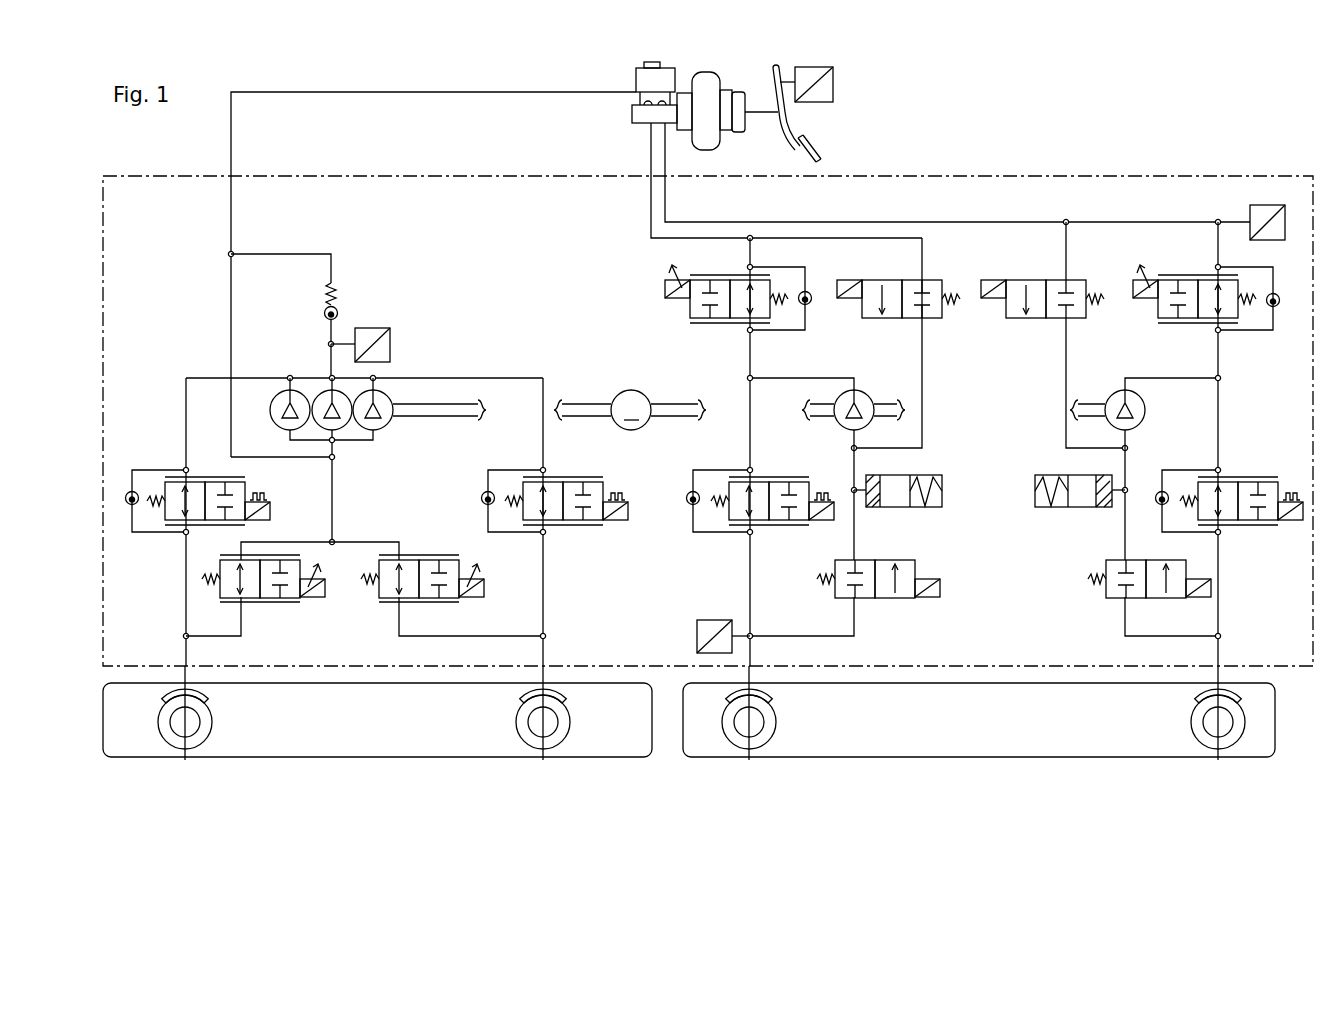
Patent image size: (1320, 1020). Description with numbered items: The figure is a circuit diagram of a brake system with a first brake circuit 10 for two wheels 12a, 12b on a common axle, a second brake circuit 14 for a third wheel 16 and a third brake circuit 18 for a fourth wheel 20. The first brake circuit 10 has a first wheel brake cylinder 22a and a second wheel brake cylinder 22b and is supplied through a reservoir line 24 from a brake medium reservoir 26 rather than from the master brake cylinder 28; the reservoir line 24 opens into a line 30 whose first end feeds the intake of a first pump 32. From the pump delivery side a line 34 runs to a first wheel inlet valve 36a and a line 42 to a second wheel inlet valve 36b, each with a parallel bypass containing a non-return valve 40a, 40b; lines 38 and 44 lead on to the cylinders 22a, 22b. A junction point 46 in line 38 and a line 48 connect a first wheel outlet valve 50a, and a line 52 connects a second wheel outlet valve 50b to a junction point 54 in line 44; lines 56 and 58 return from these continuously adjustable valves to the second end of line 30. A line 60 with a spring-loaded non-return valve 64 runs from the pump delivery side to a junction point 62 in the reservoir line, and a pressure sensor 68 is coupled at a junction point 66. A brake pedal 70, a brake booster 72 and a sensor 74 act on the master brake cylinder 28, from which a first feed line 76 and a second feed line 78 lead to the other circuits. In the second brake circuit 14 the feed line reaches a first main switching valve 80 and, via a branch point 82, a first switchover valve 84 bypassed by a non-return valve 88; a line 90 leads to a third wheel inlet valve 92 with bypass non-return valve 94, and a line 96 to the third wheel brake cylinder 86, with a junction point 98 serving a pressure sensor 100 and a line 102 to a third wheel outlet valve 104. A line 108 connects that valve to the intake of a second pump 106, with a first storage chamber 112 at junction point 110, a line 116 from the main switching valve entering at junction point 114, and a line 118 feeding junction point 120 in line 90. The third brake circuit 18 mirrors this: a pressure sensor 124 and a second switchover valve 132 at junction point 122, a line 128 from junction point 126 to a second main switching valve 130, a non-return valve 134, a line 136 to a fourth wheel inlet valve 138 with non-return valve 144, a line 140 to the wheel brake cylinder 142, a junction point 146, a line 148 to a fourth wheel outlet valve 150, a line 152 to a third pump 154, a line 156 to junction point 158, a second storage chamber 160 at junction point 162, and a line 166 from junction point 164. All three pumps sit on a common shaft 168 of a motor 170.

The first brake circuit 10 is at (243, 230).
The first wheel 12a is at (208, 720).
The second wheel 12b is at (566, 720).
The second brake circuit 14 is at (648, 254).
The third wheel 16 is at (770, 720).
The third brake circuit 18 is at (1072, 210).
The fourth wheel 20 is at (1238, 720).
The first wheel brake cylinder 22a is at (185, 760).
The second wheel brake cylinder 22b is at (543, 760).
The reservoir line 24 is at (320, 92).
The brake medium reservoir 26 is at (640, 80).
The master brake cylinder 28 is at (632, 114).
The line 30 is at (332, 492).
The first pump 32 is at (348, 444).
The line 34 is at (186, 393).
The first wheel inlet valve 36a is at (247, 492).
The second wheel inlet valve 36b is at (603, 492).
The line 38 is at (186, 590).
The non-return valve 40a is at (132, 491).
The second non-return valve 40b is at (481, 498).
The line 42 is at (467, 378).
The line 44 is at (543, 585).
The junction point 46 is at (186, 636).
The line 48 is at (232, 638).
The first wheel outlet valve 50a is at (302, 592).
The second wheel outlet valve 50b is at (461, 592).
The line 52 is at (440, 638).
The junction point 54 is at (543, 636).
The line 56 is at (270, 542).
The line 58 is at (358, 542).
The line 60 is at (331, 265).
The junction point 62 is at (231, 254).
The non-return valve 64 is at (338, 313).
The junction point 66 is at (331, 344).
The pressure sensor 68 is at (390, 340).
The brake pedal 70 is at (790, 124).
The brake booster 72 is at (712, 138).
The sensor 74 is at (833, 85).
The first feed line 76 is at (651, 200).
The second feed line 78 is at (665, 200).
The first main switching valve 80 is at (930, 325).
The branch point 82 is at (750, 240).
The first switchover valve 84 is at (690, 310).
The third wheel brake cylinder 86 is at (749, 760).
The non-return valve 88 is at (811, 292).
The line 90 is at (750, 452).
The third wheel inlet valve 92 is at (811, 524).
The non-return valve 94 is at (693, 506).
The line 96 is at (750, 586).
The junction point 98 is at (750, 636).
The pressure sensor 100 is at (697, 636).
The line 102 is at (854, 626).
The third wheel outlet valve 104 is at (940, 580).
The second pump 106 is at (862, 390).
The line 108 is at (854, 532).
The junction point 110 is at (854, 490).
The first storage chamber 112 is at (935, 475).
The junction point 114 is at (854, 448).
The line 116 is at (922, 405).
The line 118 is at (790, 378).
The junction point 120 is at (750, 378).
The junction point 122 is at (1218, 222).
The pressure sensor 124 is at (1268, 205).
The junction point 126 is at (1066, 222).
The line 128 is at (1066, 250).
The second main switching valve 130 is at (1088, 282).
The second switchover valve 132 is at (1158, 312).
The non-return valve 134 is at (1278, 307).
The line 136 is at (1218, 425).
The fourth wheel inlet valve 138 is at (1280, 482).
The line 140 is at (1218, 598).
The wheel brake cylinder 142 is at (1218, 760).
The non-return valve 144 is at (1160, 506).
The junction point 146 is at (1218, 636).
The line 148 is at (1125, 622).
The fourth wheel outlet valve 150 is at (1093, 575).
The line 152 is at (1125, 462).
The third pump 154 is at (1118, 392).
The line 156 is at (1148, 378).
The junction point 158 is at (1218, 378).
The second storage chamber 160 is at (1050, 475).
The junction point 162 is at (1122, 496).
The junction point 164 is at (1128, 447).
The line 166 is at (1066, 375).
The common shaft 168 is at (648, 425).
The motor 170 is at (617, 424).